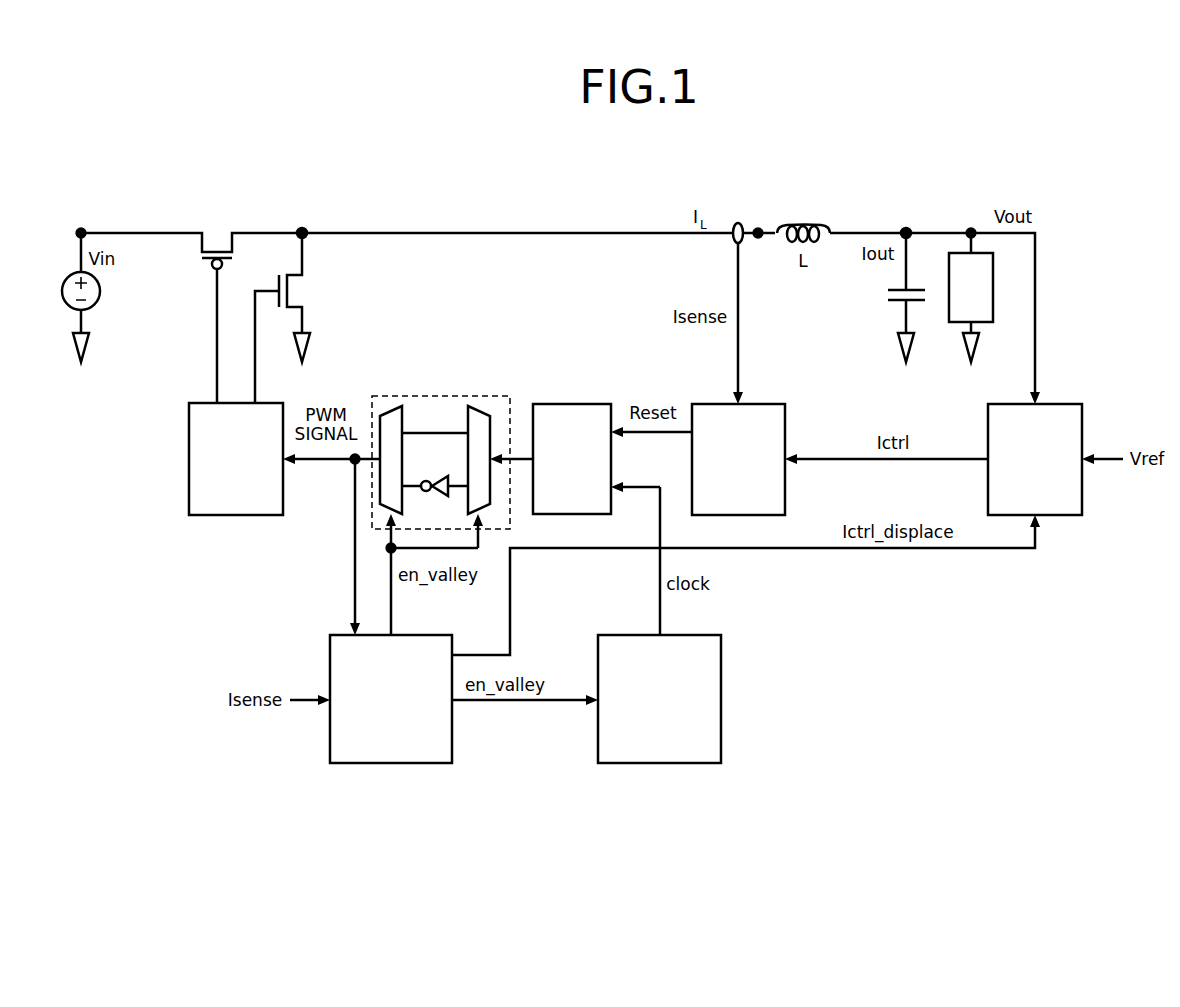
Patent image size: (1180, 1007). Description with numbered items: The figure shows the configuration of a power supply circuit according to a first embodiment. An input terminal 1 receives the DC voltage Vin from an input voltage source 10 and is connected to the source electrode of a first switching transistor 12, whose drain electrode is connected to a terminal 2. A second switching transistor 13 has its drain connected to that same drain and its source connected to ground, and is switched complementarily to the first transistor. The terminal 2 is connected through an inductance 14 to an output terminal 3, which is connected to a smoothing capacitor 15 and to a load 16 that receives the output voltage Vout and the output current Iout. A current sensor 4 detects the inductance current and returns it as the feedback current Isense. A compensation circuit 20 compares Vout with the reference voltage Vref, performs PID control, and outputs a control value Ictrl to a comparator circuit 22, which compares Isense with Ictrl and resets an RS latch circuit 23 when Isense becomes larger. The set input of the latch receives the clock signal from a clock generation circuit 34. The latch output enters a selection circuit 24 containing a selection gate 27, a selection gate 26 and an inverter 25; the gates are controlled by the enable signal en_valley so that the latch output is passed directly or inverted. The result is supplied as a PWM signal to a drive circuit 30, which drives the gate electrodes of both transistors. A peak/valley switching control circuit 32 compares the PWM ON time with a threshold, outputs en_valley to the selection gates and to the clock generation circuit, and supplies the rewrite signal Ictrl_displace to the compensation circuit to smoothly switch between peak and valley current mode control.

The input terminal 1 is at (81, 228).
The terminal 2 is at (761, 240).
The output terminal 3 is at (971, 228).
The current sensor 4 is at (732, 238).
The input voltage source 10 is at (101, 291).
The first switching transistor 12 is at (218, 232).
The second switching transistor 13 is at (297, 292).
The inductance 14 is at (798, 222).
The smoothing capacitor 15 is at (887, 296).
The load 16 is at (957, 331).
The compensation circuit 20 is at (1050, 406).
The comparator circuit 22 is at (764, 406).
The RS latch circuit 23 is at (559, 406).
The selection circuit 24 is at (442, 396).
The inverter 25 is at (436, 475).
The selection gate 26 is at (392, 405).
The selection gate 27 is at (480, 405).
The drive circuit 30 is at (189, 452).
The peak/valley switching control circuit 32 is at (411, 637).
The clock generation circuit 34 is at (684, 637).